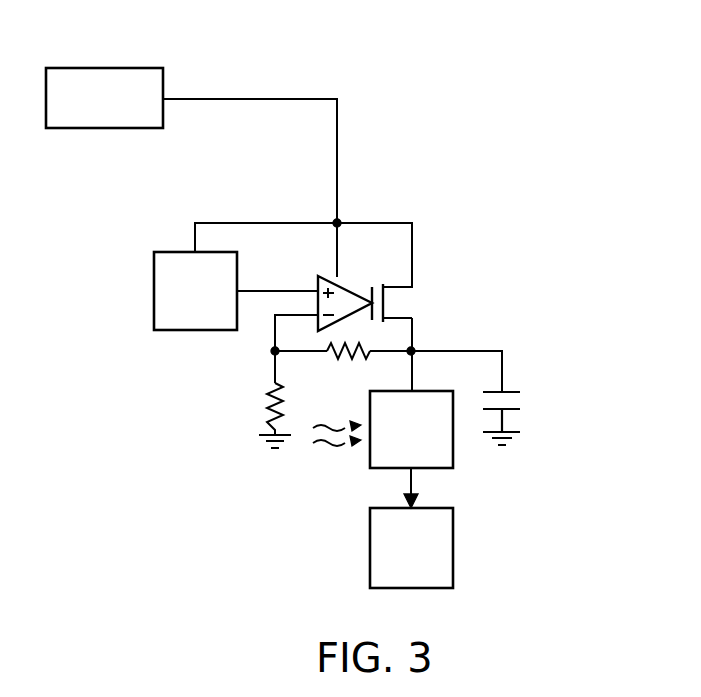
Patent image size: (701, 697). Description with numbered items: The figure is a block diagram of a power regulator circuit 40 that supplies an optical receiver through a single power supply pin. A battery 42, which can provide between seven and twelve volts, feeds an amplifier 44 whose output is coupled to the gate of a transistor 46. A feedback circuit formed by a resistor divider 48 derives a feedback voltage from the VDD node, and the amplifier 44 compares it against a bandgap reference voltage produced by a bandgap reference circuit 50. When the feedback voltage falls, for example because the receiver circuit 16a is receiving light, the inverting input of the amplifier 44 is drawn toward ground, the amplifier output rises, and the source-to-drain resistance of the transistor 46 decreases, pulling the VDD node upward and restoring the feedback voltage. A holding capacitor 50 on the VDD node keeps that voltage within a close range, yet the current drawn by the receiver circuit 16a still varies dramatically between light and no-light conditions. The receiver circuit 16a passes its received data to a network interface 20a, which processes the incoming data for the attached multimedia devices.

The power regulator circuit 40 is at (521, 169).
The battery 42 is at (101, 66).
The amplifier 44 is at (340, 286).
The transistor 46 is at (437, 300).
The resistor divider 48 is at (224, 390).
The bandgap reference circuit / holding capacitor 50 is at (154, 291).
The receiver circuit 16a is at (441, 470).
The network interface 20a is at (454, 553).